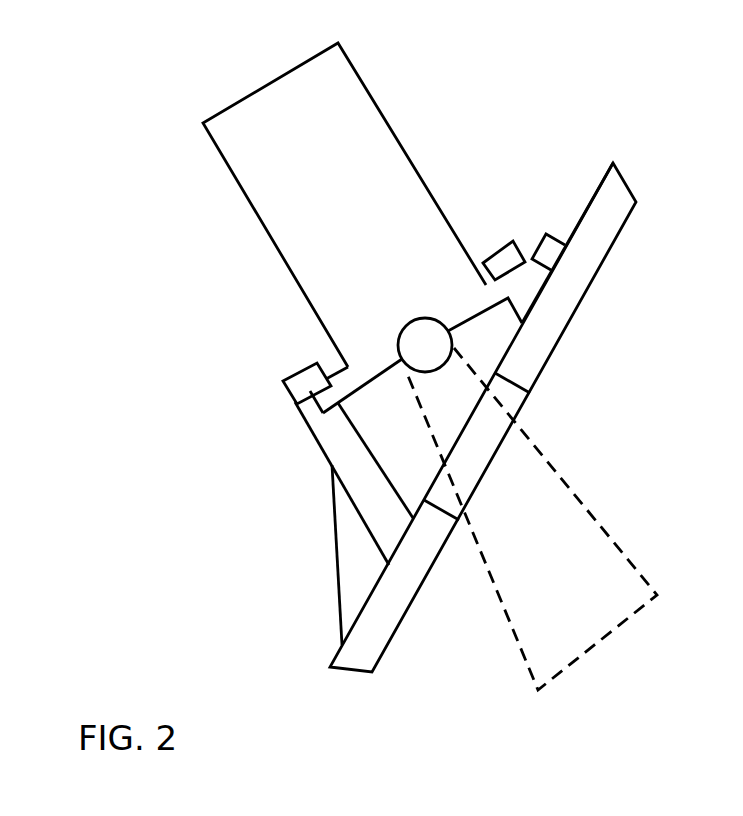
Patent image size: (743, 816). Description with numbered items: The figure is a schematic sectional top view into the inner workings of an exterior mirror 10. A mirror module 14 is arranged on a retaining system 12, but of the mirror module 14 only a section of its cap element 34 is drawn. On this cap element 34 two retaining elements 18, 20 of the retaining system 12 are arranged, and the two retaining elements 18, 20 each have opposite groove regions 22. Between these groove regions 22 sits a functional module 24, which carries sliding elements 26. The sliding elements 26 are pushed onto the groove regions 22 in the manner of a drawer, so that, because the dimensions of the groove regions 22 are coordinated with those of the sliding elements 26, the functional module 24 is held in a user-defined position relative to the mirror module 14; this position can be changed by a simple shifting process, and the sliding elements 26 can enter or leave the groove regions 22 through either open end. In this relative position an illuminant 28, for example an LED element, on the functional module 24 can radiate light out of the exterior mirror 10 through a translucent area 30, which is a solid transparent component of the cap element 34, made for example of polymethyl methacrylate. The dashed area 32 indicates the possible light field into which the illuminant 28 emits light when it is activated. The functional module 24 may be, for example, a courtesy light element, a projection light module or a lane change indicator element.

The exterior mirror 10 is at (606, 88).
The retaining system 12 is at (326, 576).
The mirror module 14 is at (515, 389).
The retaining element 18 is at (362, 482).
The retaining element 20 is at (545, 262).
The groove regions 22 is at (310, 402).
The functional module 24 is at (268, 147).
The sliding elements 26 is at (333, 388).
The illuminant 28 is at (430, 335).
The translucent area 30 is at (503, 447).
The dashed area 32 is at (620, 628).
The cap element 34 is at (598, 232).